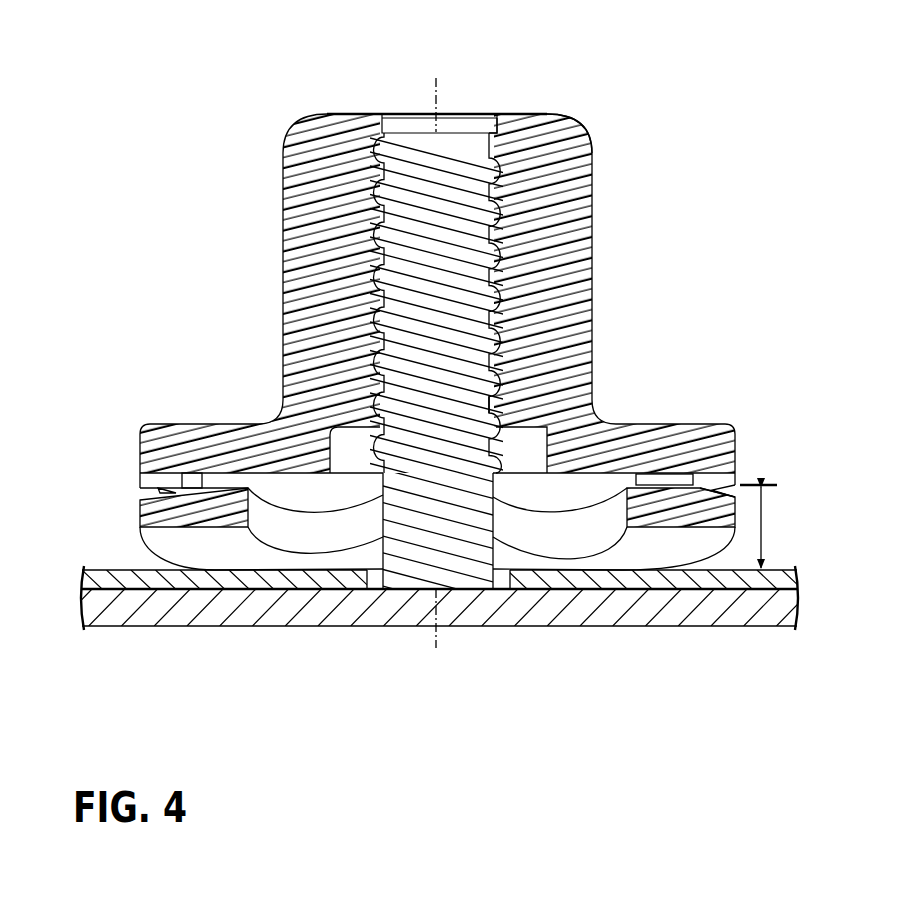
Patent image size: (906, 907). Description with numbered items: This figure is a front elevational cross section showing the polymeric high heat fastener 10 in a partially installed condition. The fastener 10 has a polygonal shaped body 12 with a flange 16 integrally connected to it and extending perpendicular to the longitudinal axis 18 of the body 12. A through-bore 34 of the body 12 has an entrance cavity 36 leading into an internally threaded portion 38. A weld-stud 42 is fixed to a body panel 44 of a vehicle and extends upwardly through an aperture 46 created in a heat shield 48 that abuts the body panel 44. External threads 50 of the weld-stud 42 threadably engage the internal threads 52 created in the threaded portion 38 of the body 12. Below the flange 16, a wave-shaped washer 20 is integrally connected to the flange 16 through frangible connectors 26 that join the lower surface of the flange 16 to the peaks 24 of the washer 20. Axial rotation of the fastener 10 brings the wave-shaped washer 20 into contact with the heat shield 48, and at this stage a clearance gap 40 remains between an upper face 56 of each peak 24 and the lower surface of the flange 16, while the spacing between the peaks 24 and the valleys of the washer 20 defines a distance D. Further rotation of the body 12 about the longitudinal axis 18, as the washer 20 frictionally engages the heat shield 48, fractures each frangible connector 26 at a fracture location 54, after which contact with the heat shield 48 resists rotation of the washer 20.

The polymeric high heat fastener 10 is at (630, 106).
The polygonal shaped body 12 is at (592, 247).
The flange 16 is at (226, 445).
The longitudinal axis 18 is at (446, 74).
The wave-shaped washer 20 is at (190, 522).
The peaks 24 is at (638, 478).
The frangible connectors 26 is at (160, 477).
The through-bore 34 is at (455, 117).
The entrance cavity 36 is at (550, 426).
The internally threaded portion 38 is at (500, 128).
The clearance gap 40 is at (676, 476).
The weld-stud 42 is at (408, 152).
The body panel 44 is at (760, 610).
The aperture 46 is at (375, 580).
The heat shield 48 is at (783, 572).
The external threads 50 is at (590, 156).
The internal threads 52 is at (505, 402).
The fracture location 54 is at (164, 490).
The upper face 56 is at (192, 474).
The distance D is at (758, 526).